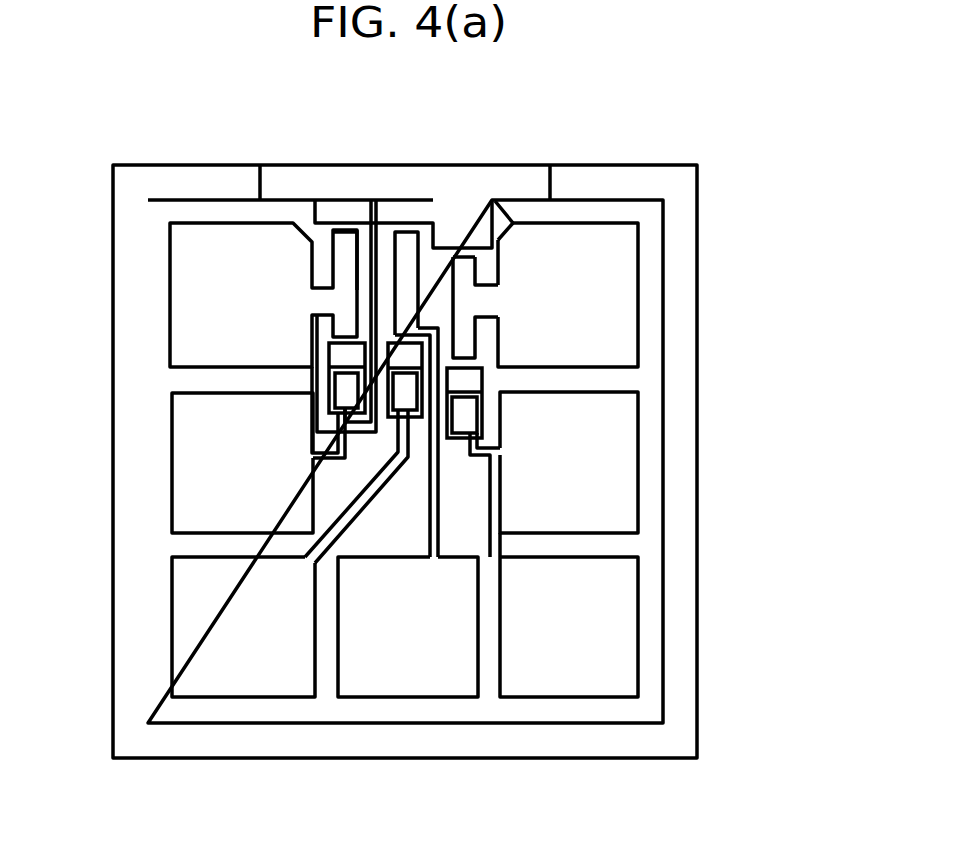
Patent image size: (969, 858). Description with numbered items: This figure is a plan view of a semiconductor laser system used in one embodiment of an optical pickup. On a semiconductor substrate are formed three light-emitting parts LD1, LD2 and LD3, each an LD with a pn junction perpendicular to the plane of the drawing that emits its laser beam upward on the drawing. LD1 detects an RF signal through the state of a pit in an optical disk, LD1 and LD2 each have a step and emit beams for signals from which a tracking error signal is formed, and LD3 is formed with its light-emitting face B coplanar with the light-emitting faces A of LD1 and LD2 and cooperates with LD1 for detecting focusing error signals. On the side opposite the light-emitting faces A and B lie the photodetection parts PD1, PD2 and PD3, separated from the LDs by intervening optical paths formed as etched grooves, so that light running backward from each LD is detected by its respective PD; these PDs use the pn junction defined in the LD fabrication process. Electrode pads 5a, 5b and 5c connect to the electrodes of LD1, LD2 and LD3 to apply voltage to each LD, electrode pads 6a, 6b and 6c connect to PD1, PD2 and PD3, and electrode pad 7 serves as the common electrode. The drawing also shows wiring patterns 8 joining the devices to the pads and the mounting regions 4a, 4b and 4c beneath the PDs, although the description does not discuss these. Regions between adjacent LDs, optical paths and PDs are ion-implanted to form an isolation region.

The electrode pad 5b is at (182, 248).
The submount 4a is at (395, 352).
The submount 4b is at (340, 353).
The submount 4c is at (472, 378).
The photodetection part PD1 is at (400, 405).
The photodetection part PD2 is at (345, 387).
The photodetection part PD3 is at (470, 415).
The electrode pad 6b is at (185, 497).
The electrode pad 5c is at (622, 323).
The electrode pad 6c is at (632, 508).
The electrode pad 6a is at (228, 683).
The electrode pad 5a is at (357, 690).
The electrode pad 7 is at (565, 688).
The wiring pattern 8 is at (487, 455).
The light-emitting part LD1 is at (409, 246).
The light-emitting part LD2 is at (345, 243).
The light-emitting part LD3 is at (467, 272).
The light-emitting face A is at (408, 247).
The light-emitting face B is at (463, 257).